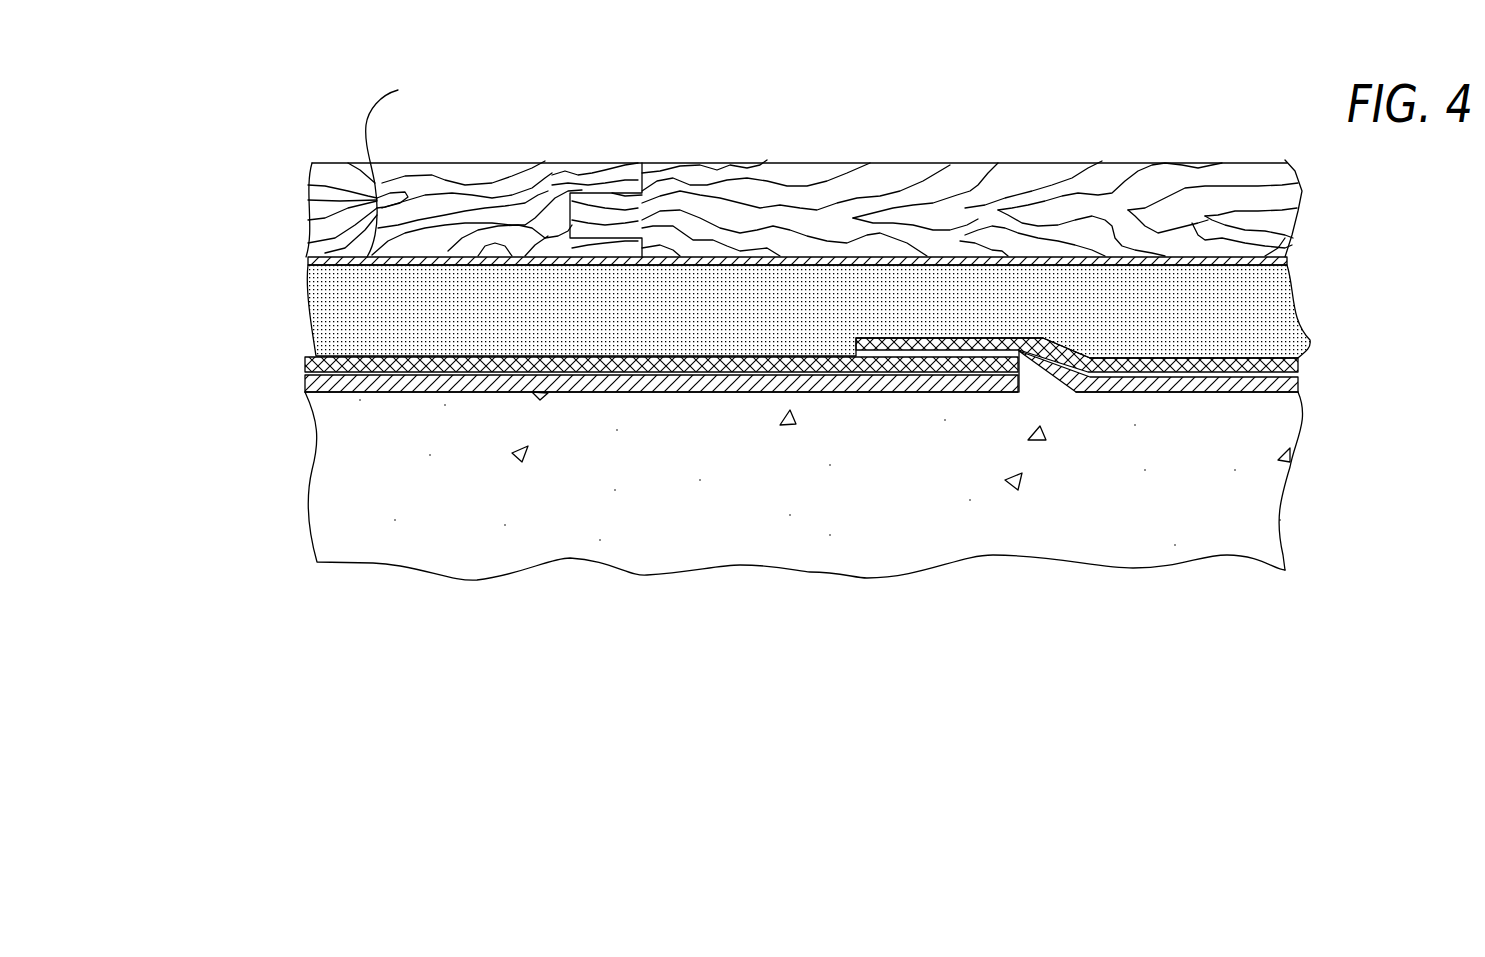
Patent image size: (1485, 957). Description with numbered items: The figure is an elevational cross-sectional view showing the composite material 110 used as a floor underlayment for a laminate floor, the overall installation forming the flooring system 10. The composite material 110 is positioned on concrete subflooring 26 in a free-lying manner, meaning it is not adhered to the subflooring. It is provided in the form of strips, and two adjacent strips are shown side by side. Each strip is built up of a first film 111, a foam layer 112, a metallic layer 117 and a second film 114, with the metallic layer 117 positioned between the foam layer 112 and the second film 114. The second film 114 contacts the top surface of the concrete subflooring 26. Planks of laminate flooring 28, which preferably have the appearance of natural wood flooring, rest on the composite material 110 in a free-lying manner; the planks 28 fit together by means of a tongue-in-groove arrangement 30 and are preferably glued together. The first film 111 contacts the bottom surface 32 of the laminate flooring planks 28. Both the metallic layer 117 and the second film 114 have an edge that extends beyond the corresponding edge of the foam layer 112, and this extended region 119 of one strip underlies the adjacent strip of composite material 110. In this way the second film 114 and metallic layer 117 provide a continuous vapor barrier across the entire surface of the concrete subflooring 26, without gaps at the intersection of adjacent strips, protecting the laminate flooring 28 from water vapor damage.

The flooring system 10 is at (277, 375).
The concrete subflooring 26 is at (804, 516).
The laminate flooring planks 28 is at (477, 163).
The tongue-in-groove arrangement 30 is at (569, 207).
The bottom surface of laminate flooring planks 32 is at (397, 166).
The composite material 110 is at (1312, 406).
The first film 111 is at (307, 257).
The foam layer 112 is at (303, 293).
The second film 114 is at (305, 390).
The metallic layer 117 is at (308, 358).
The extended region 119 is at (895, 392).